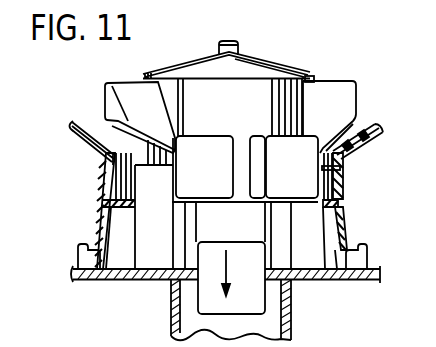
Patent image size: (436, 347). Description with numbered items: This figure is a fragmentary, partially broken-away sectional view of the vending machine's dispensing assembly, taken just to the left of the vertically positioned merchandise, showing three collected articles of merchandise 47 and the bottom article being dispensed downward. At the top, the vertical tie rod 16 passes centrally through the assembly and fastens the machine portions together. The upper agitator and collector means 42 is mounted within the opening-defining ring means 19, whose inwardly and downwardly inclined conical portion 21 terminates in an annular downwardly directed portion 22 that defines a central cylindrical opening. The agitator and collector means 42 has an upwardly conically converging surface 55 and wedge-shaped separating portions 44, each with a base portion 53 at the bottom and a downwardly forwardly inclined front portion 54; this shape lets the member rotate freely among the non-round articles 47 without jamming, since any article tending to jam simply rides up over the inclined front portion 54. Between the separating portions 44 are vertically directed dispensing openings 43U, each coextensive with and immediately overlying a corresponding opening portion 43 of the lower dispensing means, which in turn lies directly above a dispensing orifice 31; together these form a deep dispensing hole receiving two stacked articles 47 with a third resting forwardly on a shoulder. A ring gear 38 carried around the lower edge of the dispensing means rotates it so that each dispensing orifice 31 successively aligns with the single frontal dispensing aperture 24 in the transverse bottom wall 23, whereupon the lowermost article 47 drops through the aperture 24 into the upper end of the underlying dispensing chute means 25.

The vertical tie rod 16 is at (240, 44).
The upwardly conically converging surface 55 is at (277, 71).
The non-jamming merchandise agitator and collector means 42 is at (305, 66).
The separating portions 44 is at (134, 77).
The inclined front portion 54 is at (146, 108).
The dispensing openings 43U is at (292, 114).
The articles of merchandise 47 is at (290, 141).
The dispensing orifices 31 is at (194, 228).
The opening portion 43 is at (340, 176).
The annular downwardly directed portion 22 is at (344, 184).
The base portion 53 is at (111, 128).
The opening-defining ring means 19 is at (85, 116).
The inwardly centrally downwardly inclined conical portion 21 is at (350, 145).
The transverse wall 23 is at (332, 278).
The dispensing aperture 24 is at (276, 269).
The dispensing chute means 25 is at (294, 339).
The ring gear 38 is at (366, 262).